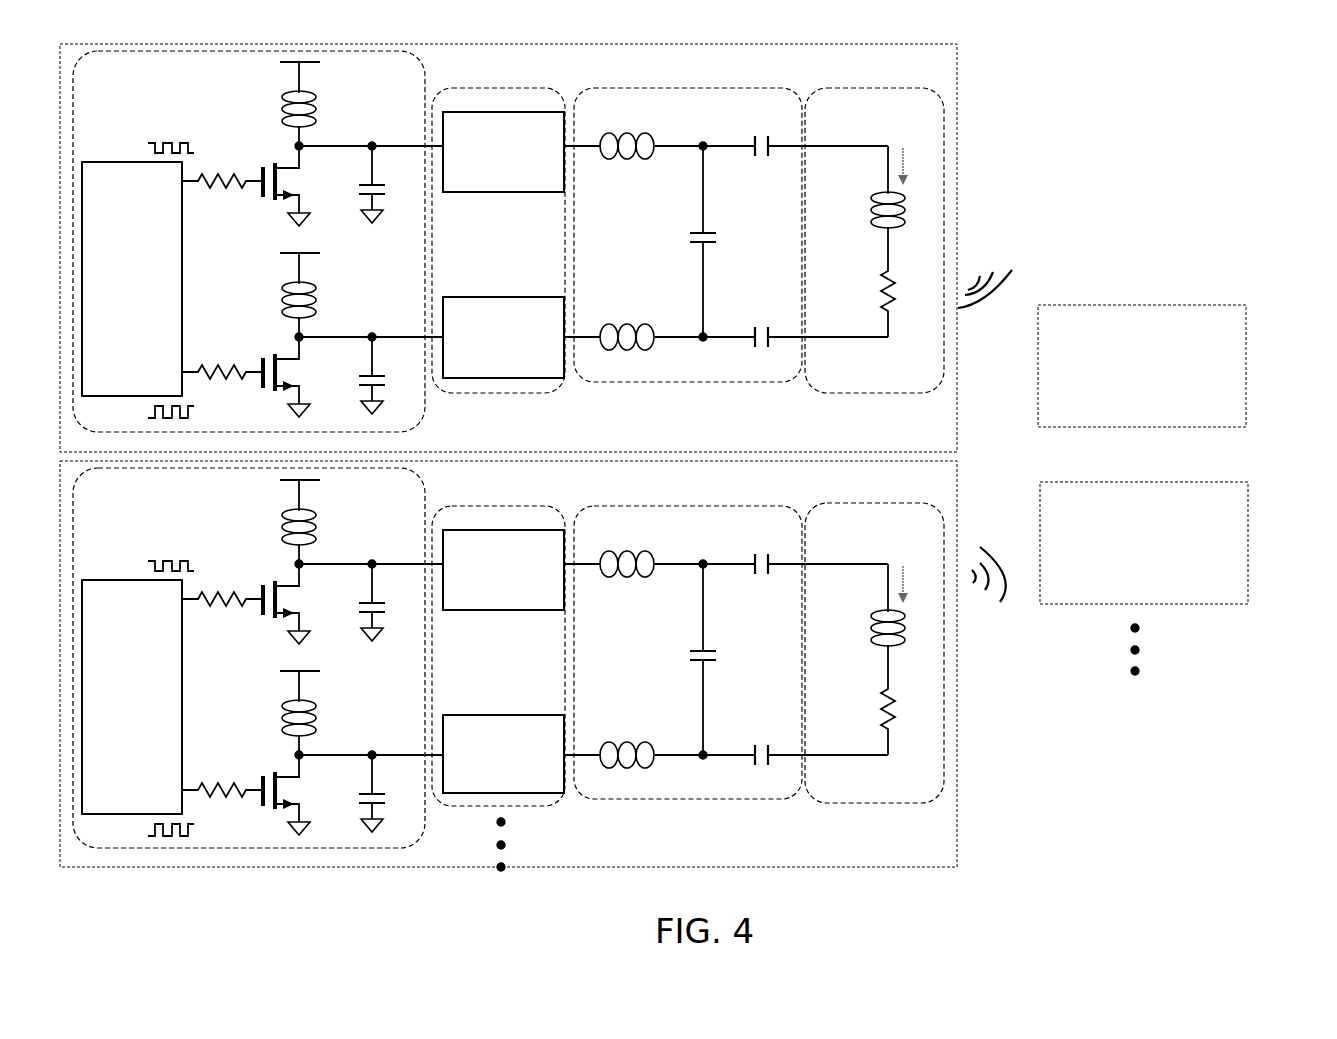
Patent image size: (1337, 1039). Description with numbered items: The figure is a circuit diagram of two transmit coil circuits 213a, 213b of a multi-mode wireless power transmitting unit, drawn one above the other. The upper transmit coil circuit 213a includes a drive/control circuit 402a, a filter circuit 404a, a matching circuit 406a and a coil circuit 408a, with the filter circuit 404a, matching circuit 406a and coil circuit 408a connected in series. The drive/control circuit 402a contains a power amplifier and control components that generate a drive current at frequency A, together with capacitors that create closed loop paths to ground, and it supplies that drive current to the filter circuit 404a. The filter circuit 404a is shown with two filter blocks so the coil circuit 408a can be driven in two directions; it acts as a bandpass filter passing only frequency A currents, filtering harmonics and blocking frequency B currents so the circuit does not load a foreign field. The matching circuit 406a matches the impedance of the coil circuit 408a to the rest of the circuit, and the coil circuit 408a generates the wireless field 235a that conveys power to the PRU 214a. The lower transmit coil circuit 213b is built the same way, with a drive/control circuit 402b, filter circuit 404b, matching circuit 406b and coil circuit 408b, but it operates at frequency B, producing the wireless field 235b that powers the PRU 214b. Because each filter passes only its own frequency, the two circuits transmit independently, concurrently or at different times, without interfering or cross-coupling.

The transmit coil circuit 213a is at (177, 46).
The transmit coil circuit 213b is at (231, 449).
The drive/control circuit 402a is at (426, 78).
The drive/control circuit 402b is at (297, 658).
The filter circuit 404a is at (521, 394).
The filter circuit 404b is at (523, 671).
The matching circuit 406a is at (692, 384).
The matching circuit 406b is at (731, 659).
The coil circuit 408a is at (843, 90).
The coil circuit 408b is at (874, 639).
The wireless field 235a is at (989, 262).
The wireless field 235b is at (969, 544).
The PRU 214a is at (1246, 335).
The PRU 214b is at (1248, 501).